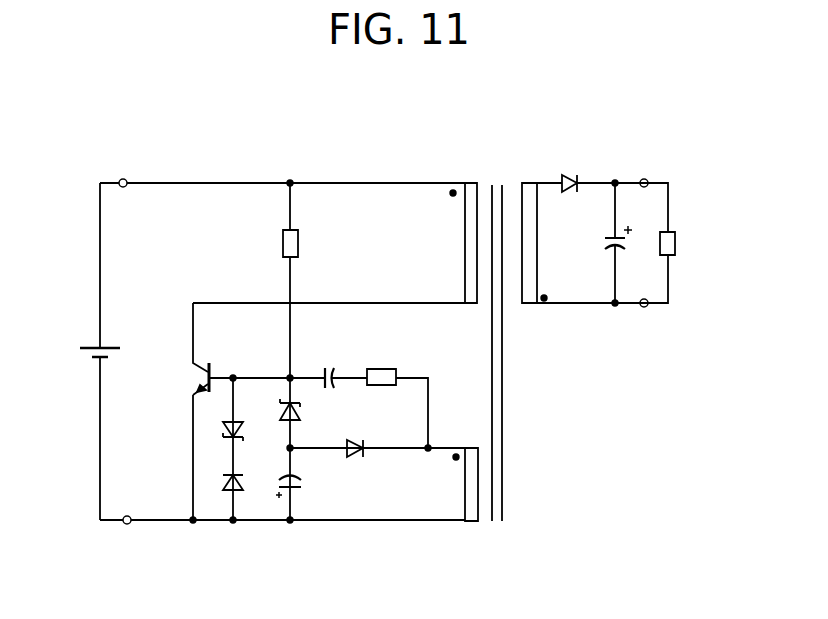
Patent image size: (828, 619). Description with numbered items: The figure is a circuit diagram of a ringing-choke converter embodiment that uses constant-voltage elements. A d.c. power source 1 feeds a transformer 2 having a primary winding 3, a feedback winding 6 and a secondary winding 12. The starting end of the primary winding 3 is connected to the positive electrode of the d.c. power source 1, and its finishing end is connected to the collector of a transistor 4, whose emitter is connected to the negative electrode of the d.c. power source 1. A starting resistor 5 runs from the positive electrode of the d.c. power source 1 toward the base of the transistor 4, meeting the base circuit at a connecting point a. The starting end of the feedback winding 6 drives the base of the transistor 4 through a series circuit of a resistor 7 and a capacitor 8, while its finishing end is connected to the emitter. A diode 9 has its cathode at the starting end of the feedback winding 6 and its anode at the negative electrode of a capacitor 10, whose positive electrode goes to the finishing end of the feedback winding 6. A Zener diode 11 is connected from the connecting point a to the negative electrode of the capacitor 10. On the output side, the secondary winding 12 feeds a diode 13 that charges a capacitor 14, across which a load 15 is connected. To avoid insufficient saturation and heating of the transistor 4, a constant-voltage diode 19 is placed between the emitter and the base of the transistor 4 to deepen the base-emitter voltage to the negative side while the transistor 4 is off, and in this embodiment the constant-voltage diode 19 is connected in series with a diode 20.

The d.c. power source 1 is at (85, 347).
The transformer 2 is at (494, 185).
The primary winding 3 is at (470, 182).
The transistor 4 is at (206, 376).
The starting resistor 5 is at (298, 242).
The feedback winding 6 is at (472, 522).
The resistor 7 is at (382, 368).
The capacitor 8 is at (328, 366).
The diode 9 is at (356, 456).
The capacitor 10 is at (302, 482).
The Zener diode 11 is at (300, 410).
The secondary winding 12 is at (525, 305).
The diode 13 is at (566, 176).
The capacitor 14 is at (604, 242).
The load 15 is at (675, 240).
The constant-voltage diode 19 is at (228, 440).
The diode 20 is at (243, 482).
The connecting point a is at (288, 375).